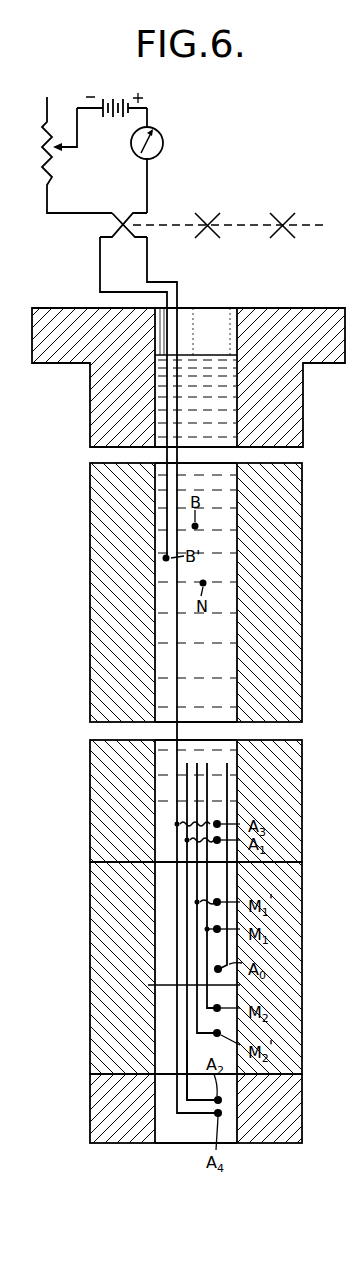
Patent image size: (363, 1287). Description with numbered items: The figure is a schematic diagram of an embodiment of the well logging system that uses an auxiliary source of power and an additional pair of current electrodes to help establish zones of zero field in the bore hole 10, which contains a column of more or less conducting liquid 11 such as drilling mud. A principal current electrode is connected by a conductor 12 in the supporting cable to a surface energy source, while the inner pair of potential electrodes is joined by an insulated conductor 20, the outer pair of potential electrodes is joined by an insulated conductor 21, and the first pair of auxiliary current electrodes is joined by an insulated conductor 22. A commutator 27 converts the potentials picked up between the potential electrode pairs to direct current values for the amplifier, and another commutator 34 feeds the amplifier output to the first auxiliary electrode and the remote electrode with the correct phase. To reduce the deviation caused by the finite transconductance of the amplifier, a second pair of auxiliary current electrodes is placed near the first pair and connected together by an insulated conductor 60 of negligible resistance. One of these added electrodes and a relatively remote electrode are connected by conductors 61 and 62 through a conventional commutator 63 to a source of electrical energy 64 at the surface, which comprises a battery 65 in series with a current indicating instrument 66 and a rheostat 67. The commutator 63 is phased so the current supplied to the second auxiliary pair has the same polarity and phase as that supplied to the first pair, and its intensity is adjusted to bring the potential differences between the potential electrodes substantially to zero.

The bore hole 10 is at (239, 573).
The conducting liquid 11 is at (205, 358).
The conductor 12 is at (228, 787).
The insulated conductor 20 is at (234, 989).
The insulated conductor 21 is at (163, 991).
The insulated conductor 22 is at (187, 1050).
The commutator 27 is at (284, 213).
The commutator 34 is at (209, 213).
The insulated conductor 60 is at (176, 910).
The conductor 61 is at (178, 660).
The conductor 62 is at (100, 270).
The commutator 63 is at (117, 221).
The source of electrical energy 64 is at (107, 161).
The battery 65 is at (117, 100).
The current indicating instrument 66 is at (163, 147).
The rheostat 67 is at (49, 169).